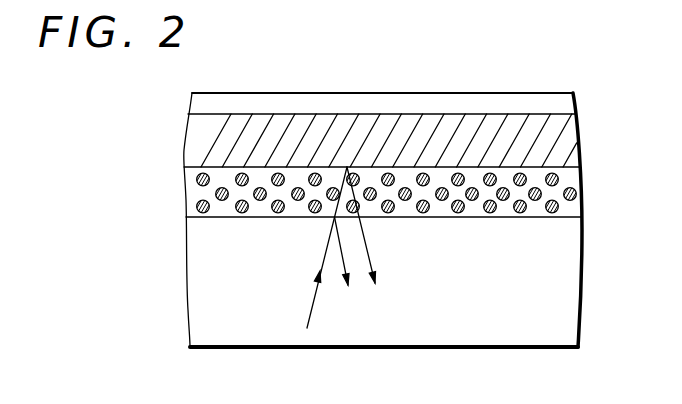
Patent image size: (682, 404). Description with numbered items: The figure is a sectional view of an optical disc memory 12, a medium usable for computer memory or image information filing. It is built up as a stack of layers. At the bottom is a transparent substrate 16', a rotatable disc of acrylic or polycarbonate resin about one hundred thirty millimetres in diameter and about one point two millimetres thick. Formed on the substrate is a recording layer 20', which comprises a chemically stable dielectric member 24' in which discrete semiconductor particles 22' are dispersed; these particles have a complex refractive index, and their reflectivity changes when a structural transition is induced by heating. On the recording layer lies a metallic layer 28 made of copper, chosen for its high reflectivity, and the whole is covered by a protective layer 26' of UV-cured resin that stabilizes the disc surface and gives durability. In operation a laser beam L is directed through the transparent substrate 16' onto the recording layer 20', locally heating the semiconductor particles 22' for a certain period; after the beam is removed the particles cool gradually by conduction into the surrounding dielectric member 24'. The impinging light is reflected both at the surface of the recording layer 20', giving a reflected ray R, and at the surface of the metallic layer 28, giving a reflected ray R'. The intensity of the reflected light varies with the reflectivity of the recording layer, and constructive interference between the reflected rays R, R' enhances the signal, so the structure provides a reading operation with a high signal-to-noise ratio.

The optical disc memory 12 is at (342, 90).
The protective layer 26' is at (389, 83).
The metallic layer 28 is at (570, 142).
The dielectric member 24' is at (412, 179).
The semiconductor particles 22' is at (387, 220).
The recording layer 20' is at (414, 221).
The transparent substrate 16' is at (385, 362).
The laser beam L is at (309, 322).
The reflected ray R is at (337, 265).
The reflected ray R' is at (379, 225).